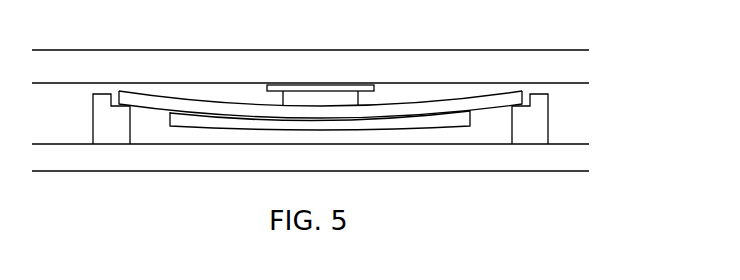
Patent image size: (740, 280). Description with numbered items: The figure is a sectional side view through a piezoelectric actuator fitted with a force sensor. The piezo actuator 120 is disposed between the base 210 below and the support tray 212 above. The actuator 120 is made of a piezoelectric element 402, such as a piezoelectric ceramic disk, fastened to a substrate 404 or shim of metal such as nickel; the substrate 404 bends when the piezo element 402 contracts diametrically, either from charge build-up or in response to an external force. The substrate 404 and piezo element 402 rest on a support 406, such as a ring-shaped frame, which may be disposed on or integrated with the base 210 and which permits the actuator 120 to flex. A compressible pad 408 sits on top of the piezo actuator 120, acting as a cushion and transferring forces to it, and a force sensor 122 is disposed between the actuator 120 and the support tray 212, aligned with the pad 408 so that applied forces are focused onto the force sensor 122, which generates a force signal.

The piezo actuator 120 is at (375, 105).
The force sensor 122 is at (348, 87).
The base 210 is at (547, 158).
The support tray 212 is at (503, 57).
The piezoelectric element 402 is at (240, 125).
The substrate 404 is at (301, 68).
The support 406 is at (108, 135).
The pad 408 is at (293, 97).